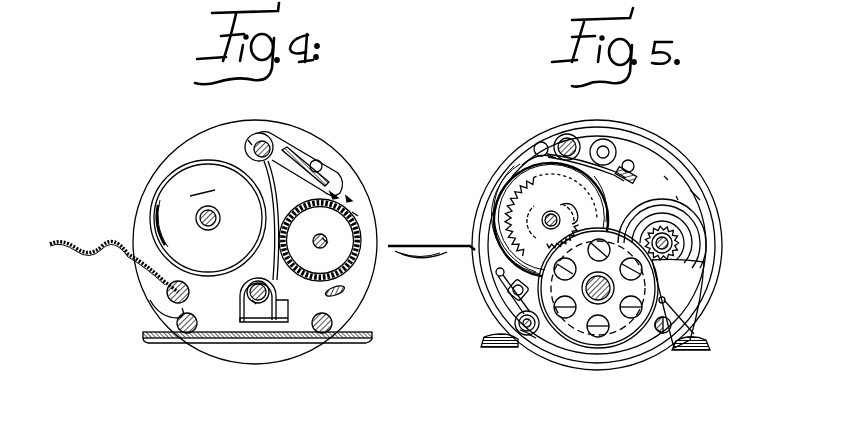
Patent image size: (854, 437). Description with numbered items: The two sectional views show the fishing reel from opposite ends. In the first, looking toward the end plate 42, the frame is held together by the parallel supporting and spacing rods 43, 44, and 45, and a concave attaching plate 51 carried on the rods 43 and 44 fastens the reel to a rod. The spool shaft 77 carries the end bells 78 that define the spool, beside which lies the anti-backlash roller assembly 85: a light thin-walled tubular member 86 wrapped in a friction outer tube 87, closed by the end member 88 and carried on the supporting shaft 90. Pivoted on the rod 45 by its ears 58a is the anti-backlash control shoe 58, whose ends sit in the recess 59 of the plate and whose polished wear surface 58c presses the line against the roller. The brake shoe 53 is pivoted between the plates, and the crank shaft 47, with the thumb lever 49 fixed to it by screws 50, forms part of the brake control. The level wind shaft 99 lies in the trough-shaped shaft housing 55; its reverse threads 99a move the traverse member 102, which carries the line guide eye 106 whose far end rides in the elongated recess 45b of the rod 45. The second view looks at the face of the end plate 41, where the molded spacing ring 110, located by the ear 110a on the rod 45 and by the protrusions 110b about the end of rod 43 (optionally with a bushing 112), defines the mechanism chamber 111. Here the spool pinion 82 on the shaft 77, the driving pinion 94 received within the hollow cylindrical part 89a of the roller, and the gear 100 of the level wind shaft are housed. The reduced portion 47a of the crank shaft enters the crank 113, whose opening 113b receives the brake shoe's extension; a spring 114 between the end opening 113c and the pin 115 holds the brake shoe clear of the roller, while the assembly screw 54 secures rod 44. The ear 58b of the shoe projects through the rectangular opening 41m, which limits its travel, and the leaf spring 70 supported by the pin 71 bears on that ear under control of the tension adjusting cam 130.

In FIG. 4, the end plate 42 is at (192, 138).
In FIG. 4, the end bell 78 is at (180, 168).
In FIG. 5, the end bell 78 is at (500, 186).
In FIG. 4, the line guide eye 106 is at (211, 186).
In FIG. 4, the shaft 77 is at (198, 220).
In FIG. 5, the shaft 77 is at (548, 212).
In FIG. 4, the tubular member 86 is at (350, 242).
In FIG. 4, the end member 88 is at (316, 229).
In FIG. 4, the anti-backlash roller assembly 85 is at (350, 199).
In FIG. 5, the anti-backlash roller assembly 85 is at (700, 194).
In FIG. 4, the outer tube 87 is at (357, 216).
In FIG. 4, the supporting shaft 90 is at (328, 243).
In FIG. 5, the supporting shaft 90 is at (675, 244).
In FIG. 4, the rod 45 is at (274, 162).
In FIG. 5, the rod 45 is at (632, 162).
In FIG. 4, the elongated recess 45b is at (250, 142).
In FIG. 4, the ears 58a is at (252, 145).
In FIG. 4, the anti-backlash control shoe 58 is at (300, 158).
In FIG. 4, the recess 59 is at (322, 165).
In FIG. 4, the wear surface 58c is at (345, 200).
In FIG. 4, the lever 49 is at (90, 262).
In FIG. 5, the lever 49 is at (430, 244).
In FIG. 4, the crank shaft 47 is at (168, 290).
In FIG. 4, the screws 50 is at (172, 312).
In FIG. 4, the rod 43 is at (182, 328).
In FIG. 5, the rod 43 is at (525, 333).
In FIG. 4, the attaching plate 51 is at (228, 340).
In FIG. 5, the attaching plate 51 is at (706, 342).
In FIG. 4, the rod 44 is at (335, 327).
In FIG. 4, the brake shoe 53 is at (345, 290).
In FIG. 4, the shaft housing 55 is at (242, 298).
In FIG. 4, the traverse member 102 is at (288, 312).
In FIG. 4, the shaft 99 is at (262, 300).
In FIG. 5, the shaft 99 is at (598, 302).
In FIG. 4, the reverse threads 99a is at (254, 302).
In FIG. 5, the spacing ring 110 is at (714, 203).
In FIG. 5, the mechanism chamber 111 is at (708, 178).
In FIG. 5, the spring 114 is at (500, 205).
In FIG. 5, the spool pinion 82 is at (574, 214).
In FIG. 5, the driving pinion 94 is at (684, 236).
In FIG. 5, the hollow cylindrical part 89a is at (690, 220).
In FIG. 5, the gear 100 is at (700, 266).
In FIG. 5, the crank 113 is at (666, 294).
In FIG. 5, the opening 113b is at (666, 301).
In FIG. 5, the assembly screw 54 is at (660, 333).
In FIG. 5, the ear 110a is at (606, 142).
In FIG. 5, the tension adjusting cam 130 is at (568, 134).
In FIG. 5, the pin 71 is at (539, 142).
In FIG. 5, the pin 115 is at (525, 165).
In FIG. 5, the leaf spring 70 is at (642, 160).
In FIG. 5, the ear 58b is at (634, 180).
In FIG. 5, the rectangular opening 41m is at (665, 174).
In FIG. 5, the end plate 41 is at (685, 195).
In FIG. 5, the end opening 113c is at (496, 274).
In FIG. 5, the reduced portion 47a is at (512, 292).
In FIG. 5, the bushing 112 is at (515, 323).
In FIG. 5, the protrusions 110b is at (534, 340).